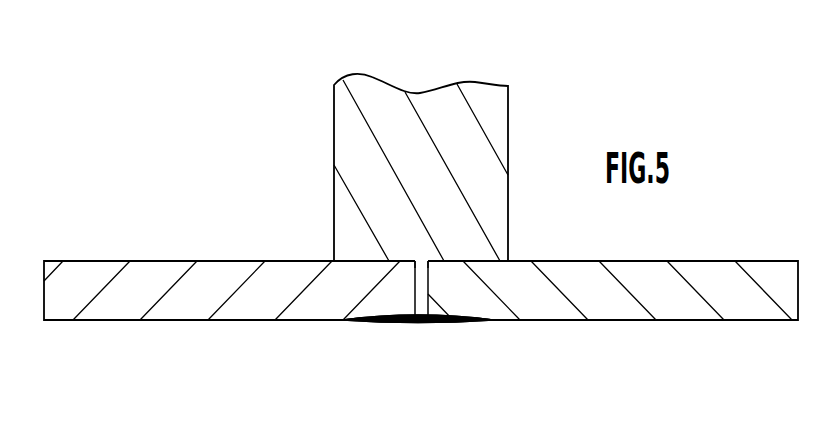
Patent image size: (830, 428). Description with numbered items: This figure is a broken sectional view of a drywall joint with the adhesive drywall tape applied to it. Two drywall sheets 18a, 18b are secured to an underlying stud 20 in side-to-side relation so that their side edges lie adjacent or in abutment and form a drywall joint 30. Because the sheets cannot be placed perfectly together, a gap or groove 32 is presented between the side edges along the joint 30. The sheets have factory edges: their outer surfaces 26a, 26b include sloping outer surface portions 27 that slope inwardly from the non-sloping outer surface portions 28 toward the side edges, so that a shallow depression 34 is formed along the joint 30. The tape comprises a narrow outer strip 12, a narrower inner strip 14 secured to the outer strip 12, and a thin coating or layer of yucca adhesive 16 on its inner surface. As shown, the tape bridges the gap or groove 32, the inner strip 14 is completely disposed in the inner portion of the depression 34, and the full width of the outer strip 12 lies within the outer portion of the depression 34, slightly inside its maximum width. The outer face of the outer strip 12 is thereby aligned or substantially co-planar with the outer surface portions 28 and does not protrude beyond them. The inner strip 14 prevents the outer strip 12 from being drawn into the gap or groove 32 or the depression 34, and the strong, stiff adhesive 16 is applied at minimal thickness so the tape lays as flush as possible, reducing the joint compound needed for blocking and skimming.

The stud 20 is at (482, 80).
The drywall sheet 18a is at (95, 260).
The drywall sheet 18b is at (712, 260).
The non-sloping outer surface portions 28 is at (237, 322).
The outer surface 26a is at (120, 322).
The outer surface 26b is at (747, 322).
The adhesive 16 is at (402, 312).
The drywall joint 30 is at (428, 277).
The gap or groove 32 is at (418, 260).
The outer strip 12 is at (382, 323).
The depression 34 is at (468, 323).
The inner strip 14 is at (442, 314).
The sloping outer surface portions 27 is at (353, 322).